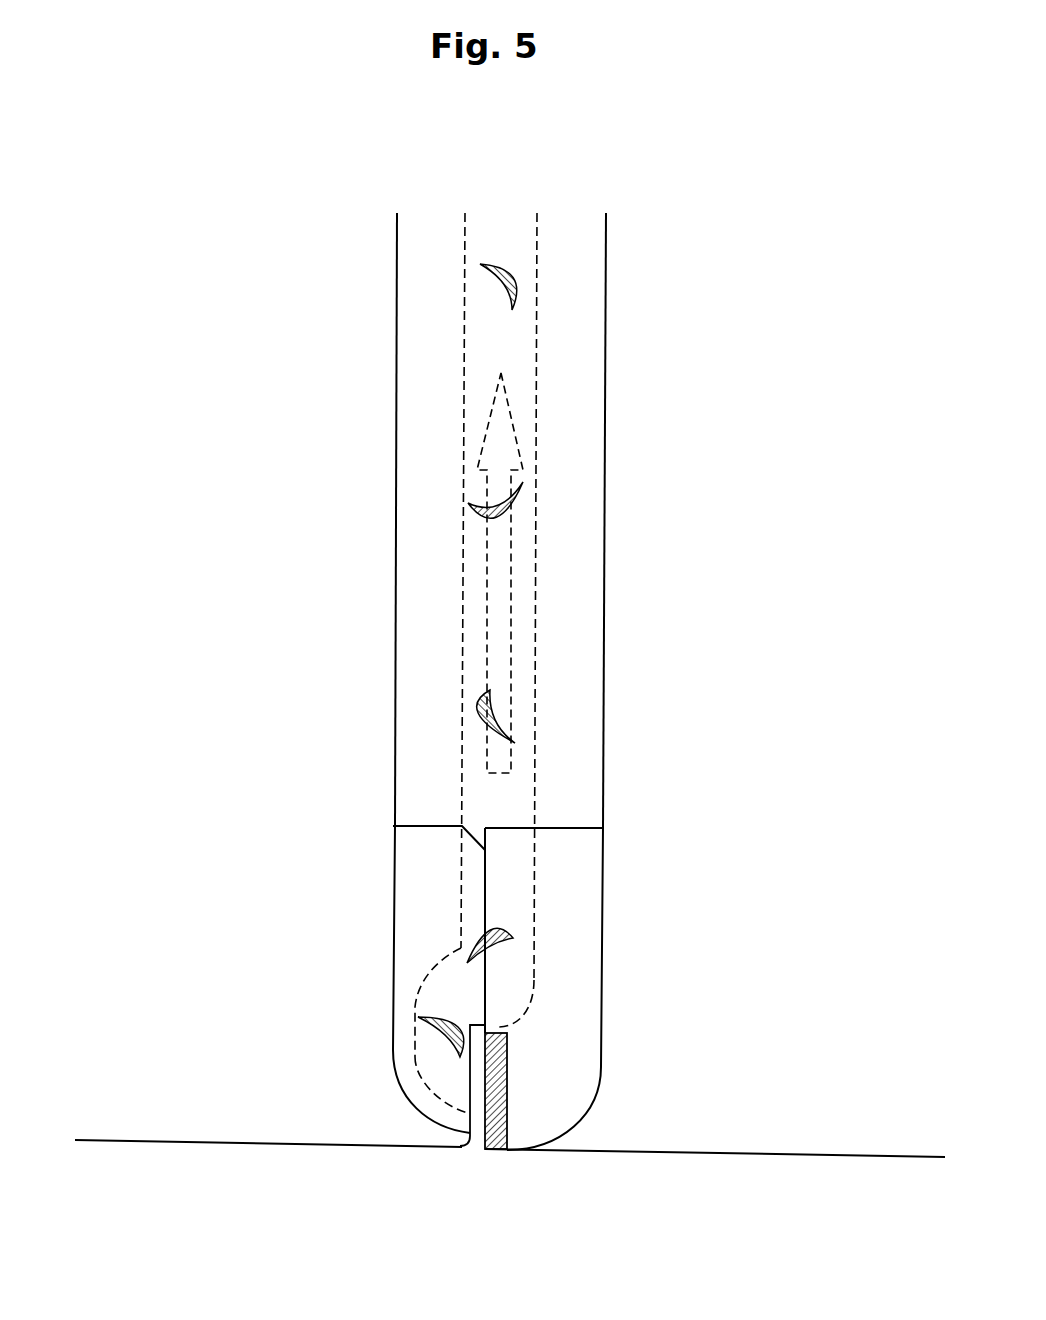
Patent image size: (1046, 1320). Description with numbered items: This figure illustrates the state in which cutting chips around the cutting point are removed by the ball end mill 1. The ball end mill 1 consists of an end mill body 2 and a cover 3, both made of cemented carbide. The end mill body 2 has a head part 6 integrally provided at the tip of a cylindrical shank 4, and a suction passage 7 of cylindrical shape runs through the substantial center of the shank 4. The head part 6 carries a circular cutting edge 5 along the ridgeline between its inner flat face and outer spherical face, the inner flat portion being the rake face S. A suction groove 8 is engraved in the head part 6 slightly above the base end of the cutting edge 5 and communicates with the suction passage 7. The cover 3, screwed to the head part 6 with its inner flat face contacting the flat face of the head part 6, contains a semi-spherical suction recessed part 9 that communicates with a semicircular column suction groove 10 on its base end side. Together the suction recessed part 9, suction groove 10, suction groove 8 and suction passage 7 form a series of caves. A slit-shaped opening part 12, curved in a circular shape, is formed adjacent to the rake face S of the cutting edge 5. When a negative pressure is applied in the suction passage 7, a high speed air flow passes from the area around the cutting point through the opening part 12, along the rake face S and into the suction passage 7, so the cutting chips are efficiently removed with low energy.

The ball end mill 1 is at (510, 725).
The end mill body 2 is at (513, 681).
The cover 3 is at (410, 928).
The shank 4 is at (592, 415).
The cutting edge 5 is at (485, 1100).
The head part 6 is at (582, 980).
The suction passage 7 is at (483, 663).
The suction groove 8 is at (535, 873).
The suction recessed part 9 is at (417, 1067).
The suction groove 10 is at (460, 867).
The opening part 12 is at (473, 1073).
The rake face S is at (477, 1073).